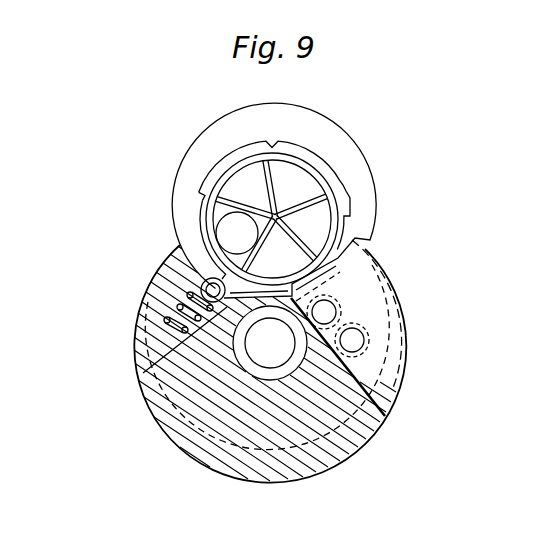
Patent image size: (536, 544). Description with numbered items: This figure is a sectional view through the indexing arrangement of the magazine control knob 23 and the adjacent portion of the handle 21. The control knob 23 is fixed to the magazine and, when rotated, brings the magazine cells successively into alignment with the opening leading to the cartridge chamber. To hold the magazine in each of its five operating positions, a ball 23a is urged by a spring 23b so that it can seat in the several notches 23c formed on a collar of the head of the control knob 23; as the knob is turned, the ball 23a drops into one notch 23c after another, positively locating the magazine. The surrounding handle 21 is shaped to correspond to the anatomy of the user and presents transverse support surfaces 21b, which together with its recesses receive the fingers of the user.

The handle 21 is at (325, 440).
The transverse support surfaces 21b is at (333, 143).
The control knob 23 is at (337, 183).
The ball 23a is at (204, 283).
The spring 23b is at (166, 318).
The notches 23c is at (194, 193).